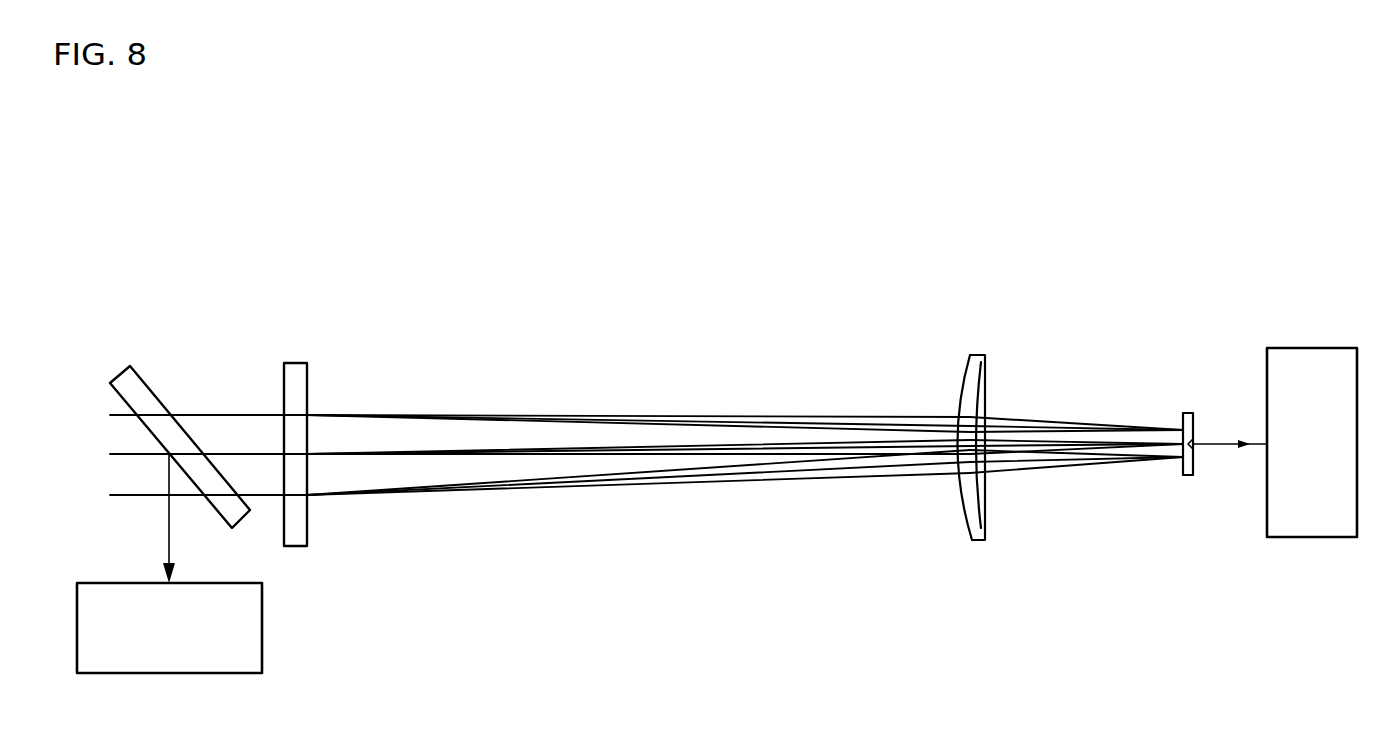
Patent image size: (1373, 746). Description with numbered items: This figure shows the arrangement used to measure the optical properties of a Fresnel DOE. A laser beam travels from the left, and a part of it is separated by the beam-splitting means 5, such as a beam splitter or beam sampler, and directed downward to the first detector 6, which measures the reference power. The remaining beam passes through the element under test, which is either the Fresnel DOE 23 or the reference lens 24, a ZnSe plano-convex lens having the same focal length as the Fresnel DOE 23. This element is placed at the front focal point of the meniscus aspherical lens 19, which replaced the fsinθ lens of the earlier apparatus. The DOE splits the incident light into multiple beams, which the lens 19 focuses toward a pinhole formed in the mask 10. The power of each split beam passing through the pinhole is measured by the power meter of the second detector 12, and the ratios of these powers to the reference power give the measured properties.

The beam-splitting means 5 is at (148, 402).
The first detector 6 is at (169, 628).
The mask 10 is at (1189, 413).
The second detector 12 is at (1312, 442).
The meniscus aspherical lens 19 is at (978, 368).
The Fresnel DOE 23 is at (301, 355).
The reference lens 24 is at (292, 357).